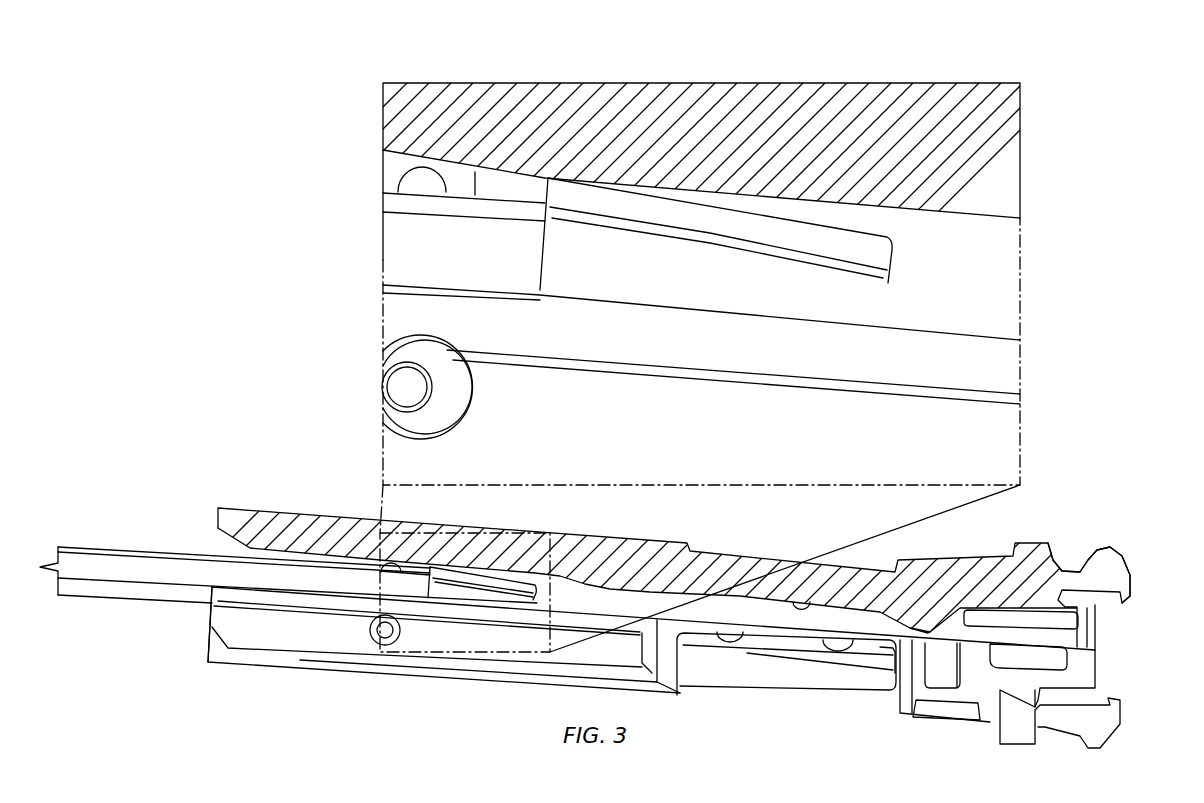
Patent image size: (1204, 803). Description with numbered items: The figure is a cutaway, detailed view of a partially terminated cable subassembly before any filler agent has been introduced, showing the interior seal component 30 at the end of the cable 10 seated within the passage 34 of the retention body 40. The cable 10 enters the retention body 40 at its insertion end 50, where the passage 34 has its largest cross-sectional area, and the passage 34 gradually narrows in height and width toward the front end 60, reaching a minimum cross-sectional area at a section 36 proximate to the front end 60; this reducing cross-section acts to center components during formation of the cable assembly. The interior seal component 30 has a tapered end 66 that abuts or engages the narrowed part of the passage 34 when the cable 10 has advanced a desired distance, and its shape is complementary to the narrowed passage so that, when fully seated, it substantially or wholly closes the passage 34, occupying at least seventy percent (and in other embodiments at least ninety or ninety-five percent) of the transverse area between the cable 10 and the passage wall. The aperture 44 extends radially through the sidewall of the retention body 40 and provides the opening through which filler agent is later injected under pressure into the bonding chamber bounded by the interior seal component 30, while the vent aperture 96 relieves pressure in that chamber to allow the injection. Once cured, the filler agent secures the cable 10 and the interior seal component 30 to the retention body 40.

The cable 10 is at (112, 556).
The interior seal component 30 is at (655, 285).
The passage 34 is at (800, 590).
The section 36 is at (930, 632).
The retention body 40 is at (895, 110).
The aperture 44 is at (412, 372).
The insertion end 50 is at (195, 617).
The front end 60 is at (1118, 553).
The tapered end 66 is at (800, 215).
The vent aperture 96 is at (400, 183).